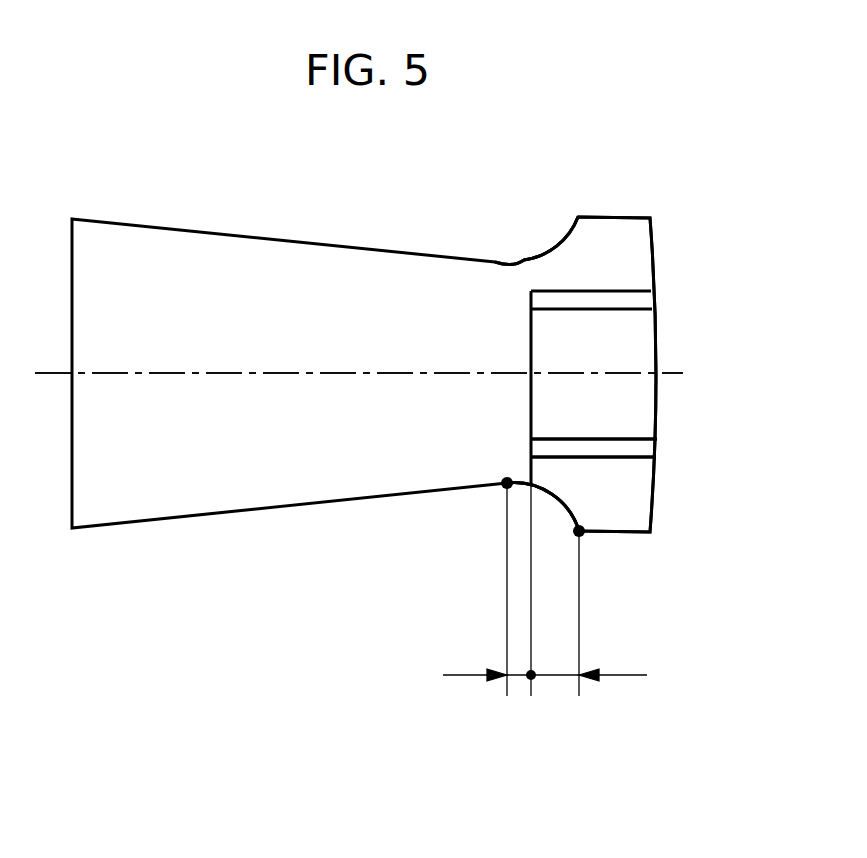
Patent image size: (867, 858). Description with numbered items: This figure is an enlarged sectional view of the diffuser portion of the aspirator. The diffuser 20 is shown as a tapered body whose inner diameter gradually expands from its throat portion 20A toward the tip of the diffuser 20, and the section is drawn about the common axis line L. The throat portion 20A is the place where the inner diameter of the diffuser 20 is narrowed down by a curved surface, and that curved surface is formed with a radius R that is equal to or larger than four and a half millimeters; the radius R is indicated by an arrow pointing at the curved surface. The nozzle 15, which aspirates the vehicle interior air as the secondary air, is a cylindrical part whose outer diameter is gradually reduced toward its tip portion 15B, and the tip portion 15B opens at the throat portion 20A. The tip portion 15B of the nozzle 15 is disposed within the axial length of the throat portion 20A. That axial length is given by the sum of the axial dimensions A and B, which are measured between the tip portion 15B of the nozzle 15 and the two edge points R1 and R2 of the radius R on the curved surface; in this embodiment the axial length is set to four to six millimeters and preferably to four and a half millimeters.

The diffuser 20 is at (256, 238).
The throat portion 20A is at (535, 257).
The radius R is at (557, 243).
The nozzle 15 is at (635, 301).
The nozzle tip portion 15B is at (530, 448).
The axis line L is at (243, 373).
The edge of R R1 is at (507, 490).
The edge of R R2 is at (582, 535).
The axial dimension A is at (487, 693).
The axial dimension B is at (589, 693).